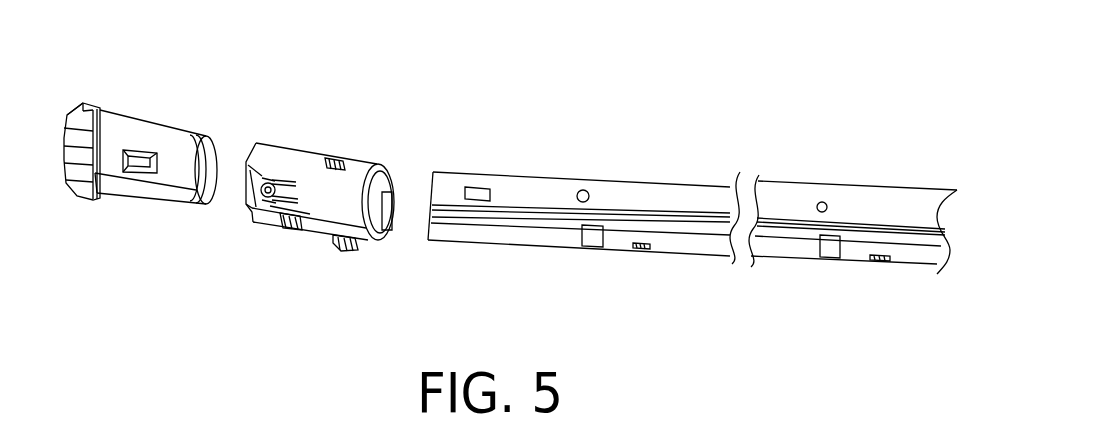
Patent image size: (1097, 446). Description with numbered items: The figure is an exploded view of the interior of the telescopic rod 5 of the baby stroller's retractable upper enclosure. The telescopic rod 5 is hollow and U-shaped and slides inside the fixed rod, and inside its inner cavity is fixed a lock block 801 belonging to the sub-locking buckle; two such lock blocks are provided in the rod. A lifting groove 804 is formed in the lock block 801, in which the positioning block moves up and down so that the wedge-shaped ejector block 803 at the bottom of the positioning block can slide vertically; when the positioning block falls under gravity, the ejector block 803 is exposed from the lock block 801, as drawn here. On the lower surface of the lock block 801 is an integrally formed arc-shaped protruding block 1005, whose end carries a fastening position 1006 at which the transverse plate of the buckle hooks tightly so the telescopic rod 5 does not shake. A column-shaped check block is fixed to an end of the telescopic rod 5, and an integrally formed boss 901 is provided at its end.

The telescopic rod 5 is at (630, 192).
The lock block 801 is at (293, 153).
The ejector block 803 is at (362, 247).
The lifting groove 804 is at (345, 160).
The boss 901 is at (84, 110).
The protruding block 1005 is at (283, 230).
The fastening position 1006 is at (248, 168).